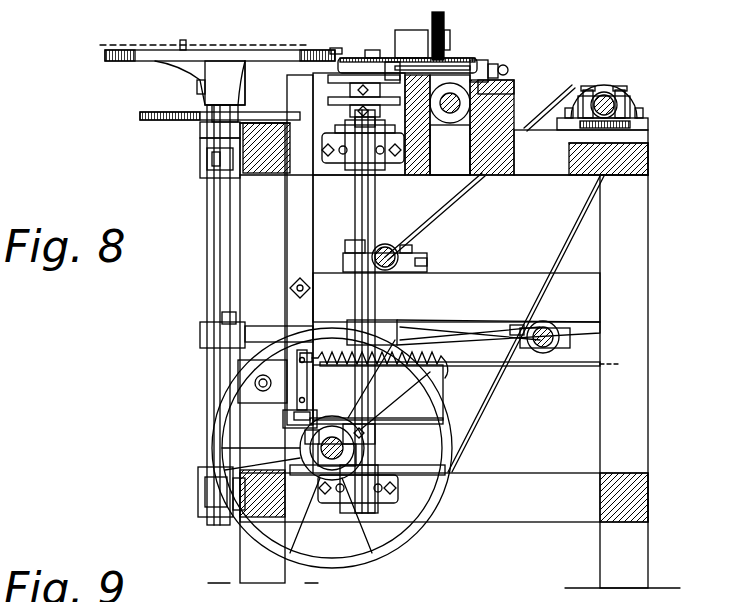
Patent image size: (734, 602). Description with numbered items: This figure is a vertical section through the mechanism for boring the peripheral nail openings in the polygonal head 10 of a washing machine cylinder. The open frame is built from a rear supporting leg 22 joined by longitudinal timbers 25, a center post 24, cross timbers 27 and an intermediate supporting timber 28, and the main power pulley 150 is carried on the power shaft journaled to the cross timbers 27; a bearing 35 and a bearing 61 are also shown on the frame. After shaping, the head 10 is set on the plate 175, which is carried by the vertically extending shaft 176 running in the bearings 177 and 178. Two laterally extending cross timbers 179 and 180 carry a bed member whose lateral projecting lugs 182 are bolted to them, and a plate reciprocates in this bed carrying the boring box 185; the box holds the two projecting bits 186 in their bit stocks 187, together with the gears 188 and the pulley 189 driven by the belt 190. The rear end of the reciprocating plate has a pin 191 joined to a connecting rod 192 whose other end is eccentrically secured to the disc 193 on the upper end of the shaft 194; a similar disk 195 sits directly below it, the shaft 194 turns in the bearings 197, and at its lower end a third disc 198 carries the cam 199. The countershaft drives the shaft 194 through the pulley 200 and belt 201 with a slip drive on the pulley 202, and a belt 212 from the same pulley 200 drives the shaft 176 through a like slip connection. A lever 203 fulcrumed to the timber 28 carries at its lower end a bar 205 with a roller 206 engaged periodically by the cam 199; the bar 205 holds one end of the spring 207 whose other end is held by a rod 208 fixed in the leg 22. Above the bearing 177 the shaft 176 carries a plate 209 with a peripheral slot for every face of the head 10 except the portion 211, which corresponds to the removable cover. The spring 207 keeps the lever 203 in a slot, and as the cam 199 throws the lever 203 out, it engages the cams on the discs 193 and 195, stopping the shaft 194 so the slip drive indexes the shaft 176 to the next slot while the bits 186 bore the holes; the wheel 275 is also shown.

The head 10 is at (105, 52).
The rear supporting leg 22 is at (622, 424).
The post 24 is at (247, 575).
The longitudinal timber 25 is at (651, 172).
The cross timber 27 is at (550, 500).
The intermediate supporting timber 28 is at (520, 258).
The bearing 35 is at (514, 103).
The shaft bearing 61 is at (455, 110).
The main power pulley 150 is at (575, 301).
The plate 175 is at (162, 61).
The vertically extending shaft 176 is at (207, 270).
The bearing 177 is at (200, 170).
The bearing 178 is at (198, 497).
The cross timber 179 is at (419, 165).
The cross timber 180 is at (496, 173).
The lateral projecting lug 182 is at (484, 70).
The boring box 185 is at (415, 52).
The bit 186 is at (367, 52).
The bit stock 187 is at (390, 53).
The gear 188 is at (432, 25).
The pulley 189 is at (443, 47).
The belt 190 is at (442, 20).
The pin 191 is at (503, 70).
The connecting rod 192 is at (514, 87).
The disc 193 is at (328, 78).
The shaft 194 is at (540, 452).
The disk 195 is at (328, 100).
The bearing 197 is at (357, 165).
The disc 198 is at (393, 420).
The cam 199 is at (358, 240).
The pulley 200 is at (290, 288).
The belt 201 is at (495, 320).
The pulley 202 is at (378, 320).
The lever 203 is at (300, 262).
The bar 205 is at (296, 405).
The roller 206 is at (300, 428).
The spring 207 is at (442, 368).
The rod 208 is at (560, 368).
The plate 209 is at (140, 116).
The portion 211 is at (222, 318).
The belt 212 is at (200, 345).
The wheel 275 is at (398, 545).